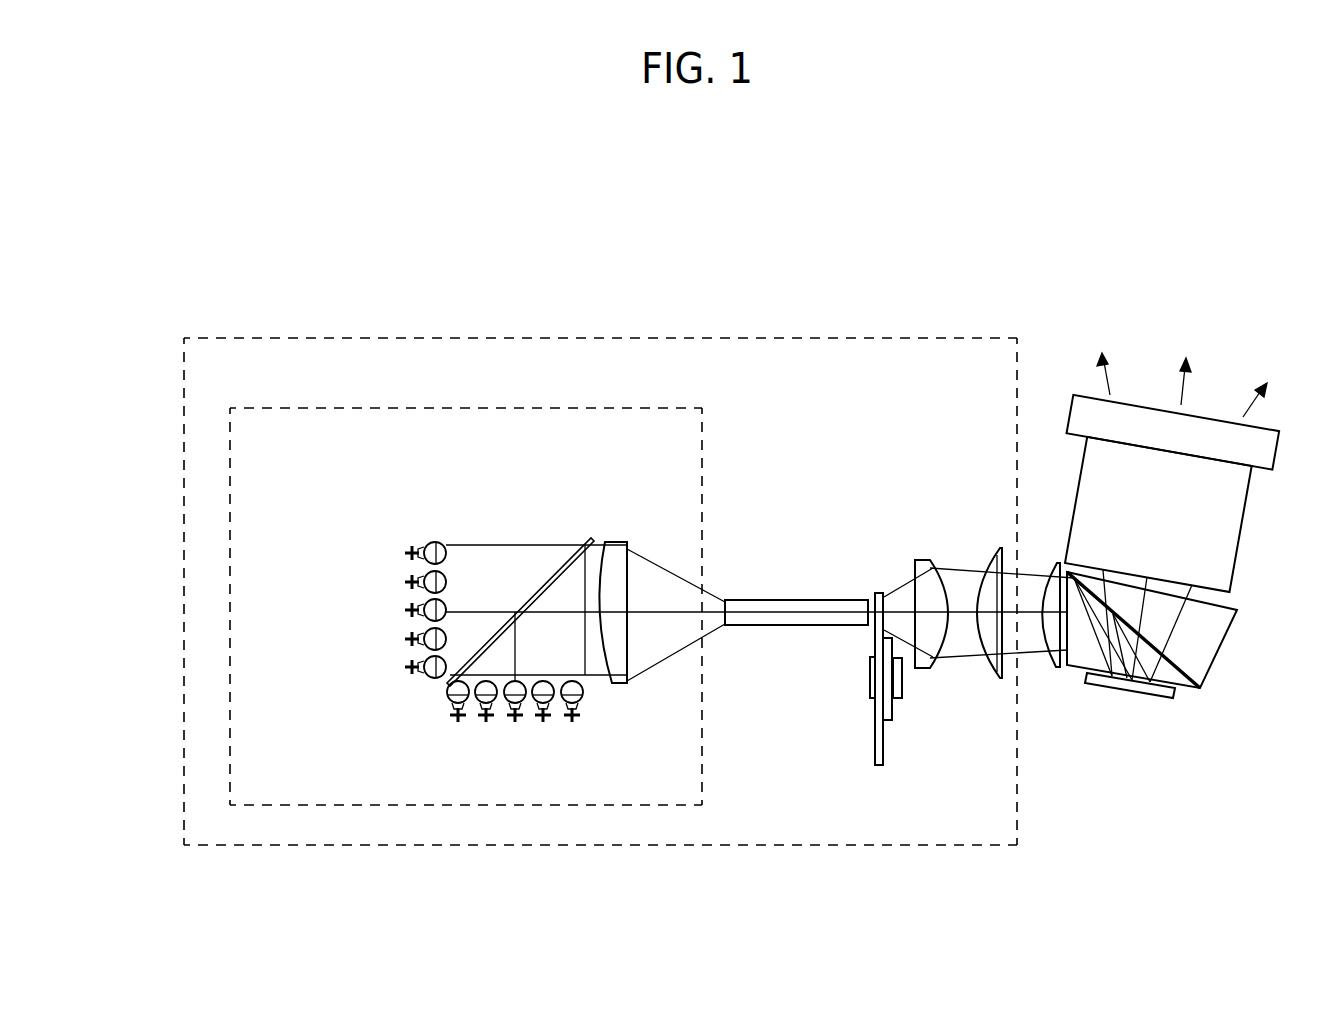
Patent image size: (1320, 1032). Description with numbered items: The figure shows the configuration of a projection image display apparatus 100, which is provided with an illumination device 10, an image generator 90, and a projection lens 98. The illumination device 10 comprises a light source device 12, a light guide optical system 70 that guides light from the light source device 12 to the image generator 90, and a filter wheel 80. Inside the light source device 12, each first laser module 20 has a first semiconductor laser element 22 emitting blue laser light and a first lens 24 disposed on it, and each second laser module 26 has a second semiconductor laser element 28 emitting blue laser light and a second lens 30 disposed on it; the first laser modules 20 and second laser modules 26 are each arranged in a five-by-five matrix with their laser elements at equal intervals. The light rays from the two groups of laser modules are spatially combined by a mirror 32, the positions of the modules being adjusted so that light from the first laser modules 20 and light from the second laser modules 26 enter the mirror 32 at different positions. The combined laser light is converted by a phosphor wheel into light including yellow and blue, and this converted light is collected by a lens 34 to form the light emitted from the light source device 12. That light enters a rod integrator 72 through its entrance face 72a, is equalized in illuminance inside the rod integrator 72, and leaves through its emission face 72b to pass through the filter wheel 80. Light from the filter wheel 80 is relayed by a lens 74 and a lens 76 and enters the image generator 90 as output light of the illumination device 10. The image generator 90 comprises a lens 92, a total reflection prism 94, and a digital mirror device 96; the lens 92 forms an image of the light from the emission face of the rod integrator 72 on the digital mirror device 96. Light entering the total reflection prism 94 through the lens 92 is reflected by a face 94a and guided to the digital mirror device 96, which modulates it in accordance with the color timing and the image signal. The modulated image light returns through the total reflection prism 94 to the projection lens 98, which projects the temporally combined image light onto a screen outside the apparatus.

The projection image display apparatus 100 is at (941, 283).
The illumination device 10 is at (565, 337).
The light source device 12 is at (565, 407).
The first laser module 20 is at (380, 705).
The first semiconductor laser element 22 is at (453, 716).
The first lens 24 is at (452, 693).
The second laser module 26 is at (348, 482).
The second semiconductor laser element 28 is at (410, 550).
The second lens 30 is at (430, 546).
The mirror 32 is at (591, 535).
The lens 34 is at (607, 542).
The light guide optical system 70 is at (728, 500).
The rod integrator 72 is at (787, 608).
The entrance face 72a is at (722, 600).
The emission face 72b is at (873, 595).
The lens 74 is at (928, 570).
The lens 76 is at (990, 570).
The filter wheel 80 is at (885, 743).
The image generator 90 is at (1043, 762).
The lens 92 is at (1055, 663).
The total reflection prism 94 is at (1217, 658).
The face 94a is at (1173, 667).
The digital mirror device (DMD) 96 is at (1133, 700).
The projection lens 98 is at (1223, 535).